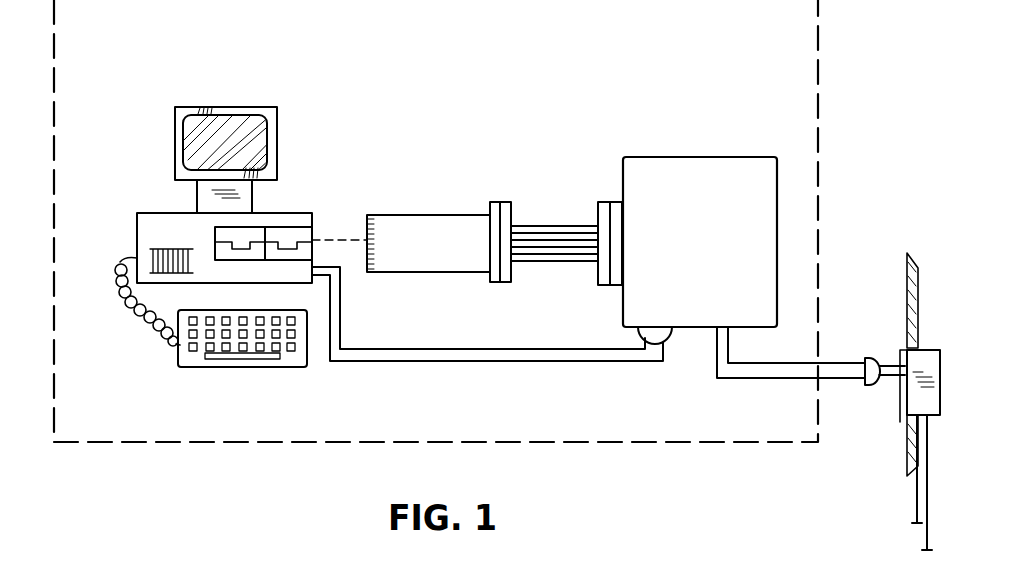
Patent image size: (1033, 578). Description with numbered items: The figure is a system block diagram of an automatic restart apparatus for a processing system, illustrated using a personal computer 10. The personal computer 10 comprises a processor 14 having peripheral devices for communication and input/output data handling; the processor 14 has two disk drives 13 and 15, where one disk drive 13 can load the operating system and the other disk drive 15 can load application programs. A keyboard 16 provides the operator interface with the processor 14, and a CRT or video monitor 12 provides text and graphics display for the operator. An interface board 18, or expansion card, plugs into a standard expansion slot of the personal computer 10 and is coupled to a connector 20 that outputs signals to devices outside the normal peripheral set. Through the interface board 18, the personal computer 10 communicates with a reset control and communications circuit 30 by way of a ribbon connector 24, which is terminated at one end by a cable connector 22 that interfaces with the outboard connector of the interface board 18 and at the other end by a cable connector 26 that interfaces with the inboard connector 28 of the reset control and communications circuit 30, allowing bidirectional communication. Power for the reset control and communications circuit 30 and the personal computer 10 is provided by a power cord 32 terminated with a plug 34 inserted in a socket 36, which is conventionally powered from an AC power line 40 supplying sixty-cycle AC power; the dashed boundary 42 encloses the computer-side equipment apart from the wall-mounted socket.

The personal computer 10 is at (160, 196).
The video monitor 12 is at (250, 107).
The disk drive 13 is at (255, 227).
The processor 14 is at (234, 222).
The disk drive 15 is at (290, 227).
The keyboard 16 is at (192, 367).
The interface board 18 is at (410, 215).
The connector 20 is at (523, 216).
The cable connector 22 is at (505, 202).
The ribbon connector 24 is at (545, 262).
The cable connector 26 is at (603, 285).
The inboard connector 28 is at (615, 288).
The reset control and communications circuit 30 is at (692, 157).
The power cord 32 is at (745, 378).
The plug 34 is at (452, 362).
The socket 36 is at (900, 408).
The AC power line 40 is at (917, 492).
The remote location boundary 42 is at (822, 156).